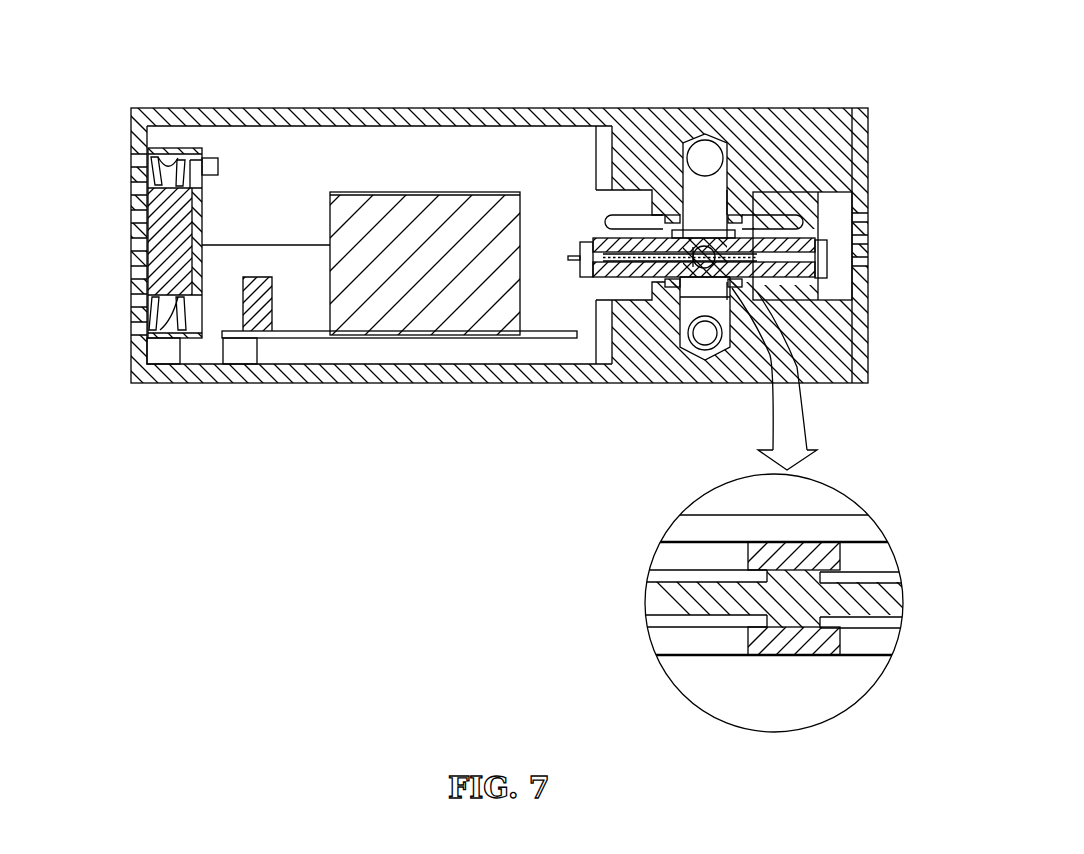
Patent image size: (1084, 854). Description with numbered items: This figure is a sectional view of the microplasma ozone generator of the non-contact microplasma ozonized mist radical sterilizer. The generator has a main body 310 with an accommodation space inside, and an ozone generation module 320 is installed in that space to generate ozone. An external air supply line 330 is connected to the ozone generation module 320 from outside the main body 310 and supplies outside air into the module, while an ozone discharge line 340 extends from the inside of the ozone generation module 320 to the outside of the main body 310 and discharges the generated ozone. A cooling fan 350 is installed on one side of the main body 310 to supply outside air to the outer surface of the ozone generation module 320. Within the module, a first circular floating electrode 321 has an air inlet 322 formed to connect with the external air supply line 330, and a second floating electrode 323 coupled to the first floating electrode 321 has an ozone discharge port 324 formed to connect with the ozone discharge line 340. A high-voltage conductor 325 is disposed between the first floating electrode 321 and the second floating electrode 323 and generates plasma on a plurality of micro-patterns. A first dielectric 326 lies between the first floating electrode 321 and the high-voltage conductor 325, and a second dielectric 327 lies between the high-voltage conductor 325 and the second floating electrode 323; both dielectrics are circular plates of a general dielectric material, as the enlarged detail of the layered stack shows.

The main body 310 is at (645, 132).
The ozone generation module 320 is at (783, 245).
The first circular floating electrode 321 is at (820, 247).
The air inlet 322 is at (693, 247).
The second floating electrode 323 is at (783, 273).
The ozone discharge port 324 is at (693, 262).
The high-voltage conductor 325 is at (677, 598).
The first dielectric 326 is at (638, 247).
The second dielectric 327 is at (633, 270).
The external air supply line 330 is at (708, 153).
The ozone discharge line 340 is at (700, 337).
The cooling fan 350 is at (165, 270).